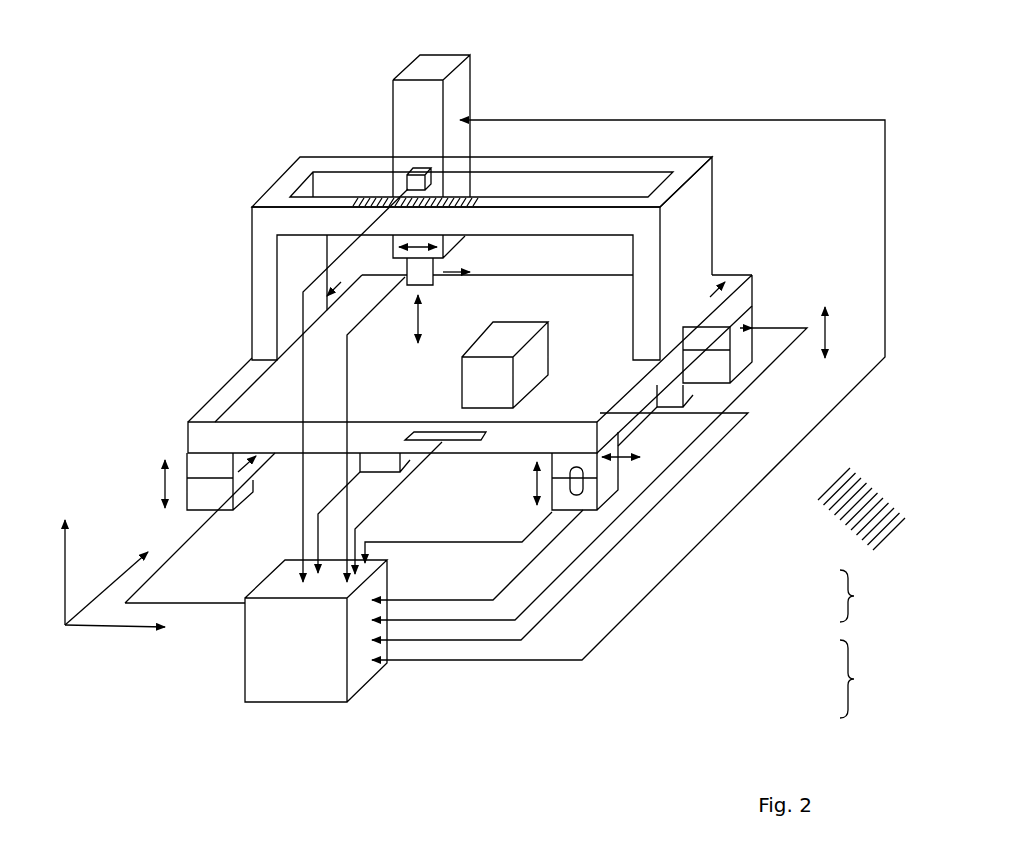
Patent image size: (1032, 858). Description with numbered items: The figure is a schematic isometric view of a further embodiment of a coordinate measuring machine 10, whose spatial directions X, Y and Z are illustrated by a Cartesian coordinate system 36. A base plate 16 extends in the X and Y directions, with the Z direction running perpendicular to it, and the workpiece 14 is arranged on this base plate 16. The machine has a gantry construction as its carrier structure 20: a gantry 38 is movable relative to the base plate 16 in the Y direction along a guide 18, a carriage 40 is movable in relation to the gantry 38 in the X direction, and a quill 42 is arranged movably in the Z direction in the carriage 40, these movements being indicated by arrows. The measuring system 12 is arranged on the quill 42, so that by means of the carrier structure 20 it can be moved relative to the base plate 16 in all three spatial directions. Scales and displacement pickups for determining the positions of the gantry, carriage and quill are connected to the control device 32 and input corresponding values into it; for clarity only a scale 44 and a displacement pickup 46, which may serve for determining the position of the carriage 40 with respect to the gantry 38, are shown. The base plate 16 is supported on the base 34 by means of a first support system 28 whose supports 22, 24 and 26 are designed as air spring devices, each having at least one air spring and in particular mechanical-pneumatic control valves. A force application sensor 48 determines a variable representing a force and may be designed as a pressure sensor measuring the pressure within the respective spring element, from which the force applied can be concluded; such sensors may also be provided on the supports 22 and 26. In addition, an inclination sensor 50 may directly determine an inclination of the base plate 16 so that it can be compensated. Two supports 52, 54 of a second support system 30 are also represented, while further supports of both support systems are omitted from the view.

The coordinate measuring machine 10 is at (205, 265).
The measuring system 12 is at (432, 292).
The workpiece 14 is at (506, 325).
The base plate 16 is at (590, 310).
The guide 18 is at (225, 391).
The carrier structure 20 is at (386, 150).
The support 22 is at (168, 445).
The support 24 is at (521, 512).
The support 26 is at (770, 300).
The first support system 28 is at (853, 679).
The second support system 30 is at (853, 595).
The control device 32 is at (284, 660).
The base 34 is at (852, 487).
The Cartesian coordinate system 36 is at (68, 643).
The gantry 38 is at (725, 220).
The carriage 40 is at (480, 85).
The quill 42 is at (405, 274).
The scale 44 is at (475, 200).
The displacement pickup 46 is at (429, 166).
The force application sensor 48 is at (584, 497).
The inclination sensor 50 is at (445, 445).
The support 52 is at (370, 450).
The support 54 is at (690, 393).